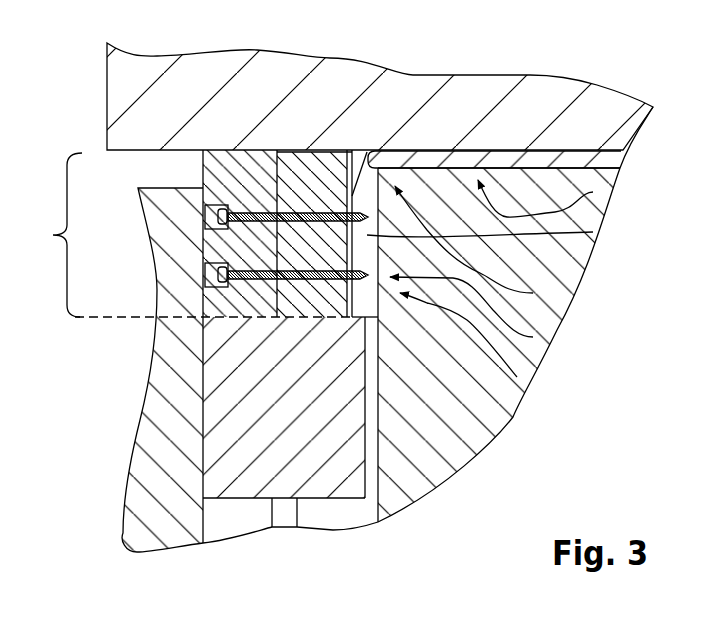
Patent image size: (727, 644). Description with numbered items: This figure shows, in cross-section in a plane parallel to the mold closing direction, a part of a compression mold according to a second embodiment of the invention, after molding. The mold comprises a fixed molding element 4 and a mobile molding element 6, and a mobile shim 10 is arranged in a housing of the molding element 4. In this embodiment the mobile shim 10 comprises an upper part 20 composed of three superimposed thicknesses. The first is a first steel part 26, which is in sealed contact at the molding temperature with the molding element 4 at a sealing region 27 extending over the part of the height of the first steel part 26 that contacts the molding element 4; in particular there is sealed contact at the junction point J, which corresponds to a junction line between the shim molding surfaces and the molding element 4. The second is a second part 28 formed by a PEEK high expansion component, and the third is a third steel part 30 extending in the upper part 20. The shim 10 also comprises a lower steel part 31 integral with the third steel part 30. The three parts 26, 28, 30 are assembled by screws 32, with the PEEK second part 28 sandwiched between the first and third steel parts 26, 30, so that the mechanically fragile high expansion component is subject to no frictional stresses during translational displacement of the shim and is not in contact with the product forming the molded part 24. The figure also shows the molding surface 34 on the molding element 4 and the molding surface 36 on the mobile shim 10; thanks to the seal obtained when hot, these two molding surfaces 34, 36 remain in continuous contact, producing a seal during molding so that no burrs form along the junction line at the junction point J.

The fixed molding element 4 is at (167, 527).
The mobile molding element 6 is at (412, 100).
The mobile shim 10 is at (517, 377).
The upper part 20 is at (51, 235).
The molded part 24 is at (493, 163).
The first steel part 26 is at (533, 293).
The sealing region 27 is at (533, 337).
The second part 28 is at (310, 163).
The third steel part 30 is at (228, 172).
The lower steel part 31 is at (238, 490).
The screws 32 is at (229, 230).
The molding surface 34 is at (593, 192).
The molding surface 36 is at (379, 156).
The junction point J is at (490, 232).